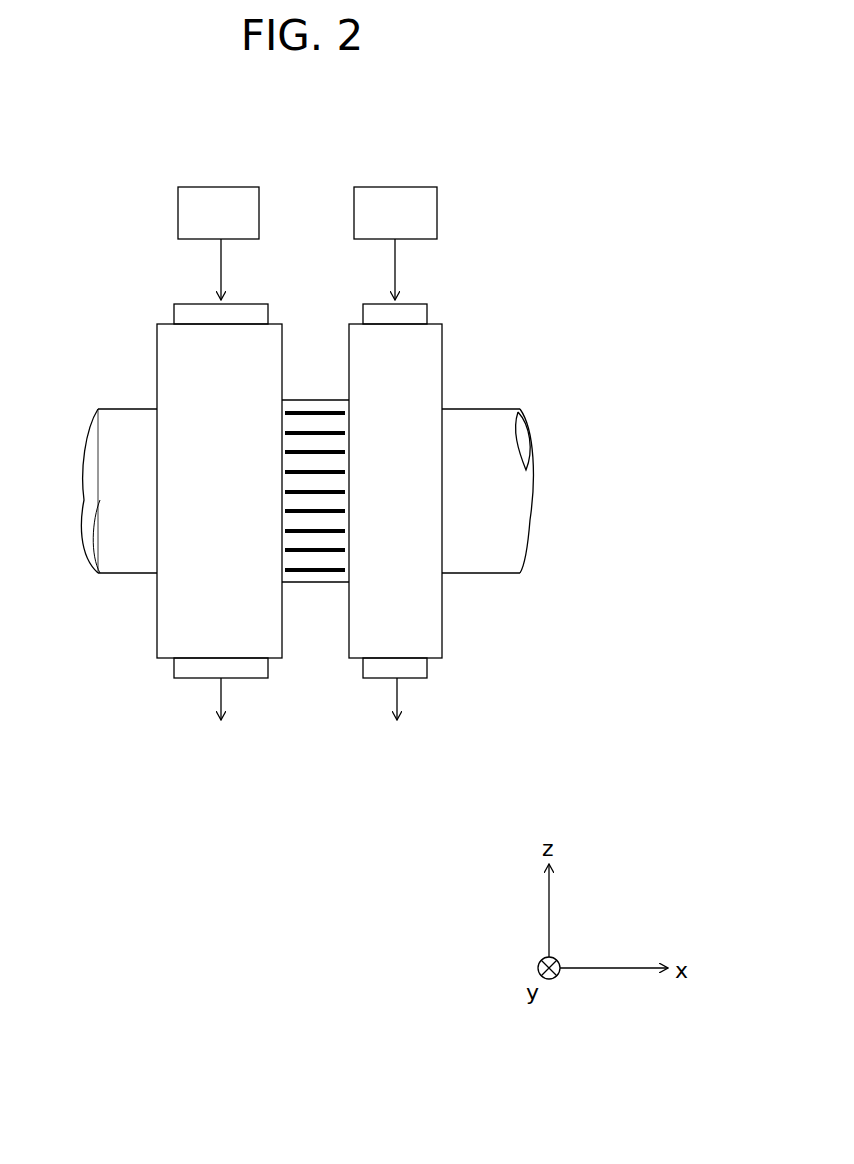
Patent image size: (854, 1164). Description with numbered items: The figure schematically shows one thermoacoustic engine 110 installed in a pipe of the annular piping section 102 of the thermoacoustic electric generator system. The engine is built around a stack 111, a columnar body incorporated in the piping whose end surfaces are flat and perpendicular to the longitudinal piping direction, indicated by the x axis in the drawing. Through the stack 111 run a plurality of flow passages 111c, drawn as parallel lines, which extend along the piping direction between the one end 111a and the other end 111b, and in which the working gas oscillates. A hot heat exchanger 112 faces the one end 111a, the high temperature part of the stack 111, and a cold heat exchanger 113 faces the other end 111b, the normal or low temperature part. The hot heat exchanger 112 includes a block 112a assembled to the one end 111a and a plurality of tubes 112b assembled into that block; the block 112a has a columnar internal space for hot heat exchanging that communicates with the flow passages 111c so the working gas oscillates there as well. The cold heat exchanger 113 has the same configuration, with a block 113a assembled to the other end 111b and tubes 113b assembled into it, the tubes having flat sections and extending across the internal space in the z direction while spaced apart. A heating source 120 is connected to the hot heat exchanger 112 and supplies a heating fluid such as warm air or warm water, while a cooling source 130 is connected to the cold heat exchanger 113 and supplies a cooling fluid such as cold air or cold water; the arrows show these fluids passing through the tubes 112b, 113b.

The annular piping section 102 is at (500, 420).
The thermoacoustic engine 110 is at (297, 543).
The stack 111 is at (299, 504).
The one end of the stack 111a is at (282, 563).
The other end of the stack 111b is at (347, 563).
The flow passages 111c is at (311, 426).
The hot heat exchanger 112 is at (184, 518).
The block of the hot heat exchanger 112a is at (157, 337).
The tubes of the hot heat exchanger 112b is at (240, 303).
The cold heat exchanger 113 is at (430, 518).
The block of the cold heat exchanger 113a is at (442, 335).
The tubes of the cold heat exchanger 113b is at (380, 303).
The heating source 120 is at (176, 212).
The cooling source 130 is at (439, 215).